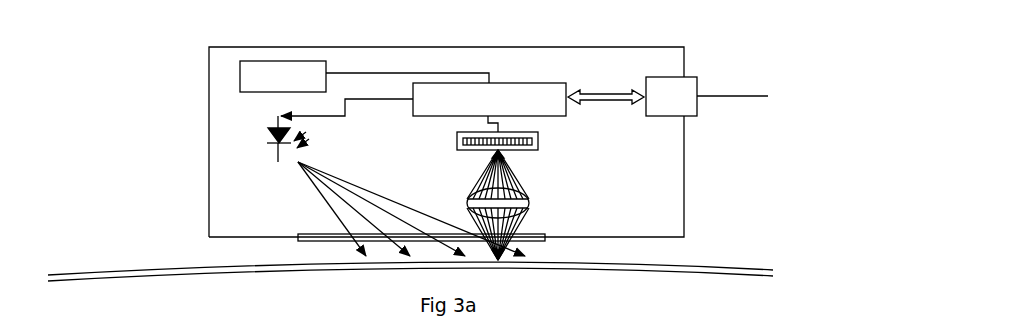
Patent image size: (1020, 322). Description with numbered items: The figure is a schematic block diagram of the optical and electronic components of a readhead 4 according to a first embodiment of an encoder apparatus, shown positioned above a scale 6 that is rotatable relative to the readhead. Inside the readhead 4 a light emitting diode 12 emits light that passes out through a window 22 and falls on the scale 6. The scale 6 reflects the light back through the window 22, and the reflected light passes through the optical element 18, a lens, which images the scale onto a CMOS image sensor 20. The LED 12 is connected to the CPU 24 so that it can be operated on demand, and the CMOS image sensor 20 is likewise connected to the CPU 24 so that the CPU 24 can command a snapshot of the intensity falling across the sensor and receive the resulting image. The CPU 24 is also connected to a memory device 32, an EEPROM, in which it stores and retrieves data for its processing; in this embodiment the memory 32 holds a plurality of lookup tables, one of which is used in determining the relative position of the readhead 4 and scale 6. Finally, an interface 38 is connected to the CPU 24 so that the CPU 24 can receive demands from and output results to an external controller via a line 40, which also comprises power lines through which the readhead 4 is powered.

The readhead 4 is at (203, 153).
The scale 6 is at (88, 258).
The light emitting diode 12 is at (396, 186).
The optical element 18 is at (539, 203).
The CMOS image sensor 20 is at (547, 140).
The window 22 is at (306, 231).
The CPU 24 is at (462, 107).
The memory device 32 is at (364, 76).
The interface 38 is at (671, 96).
The line 40 is at (744, 103).